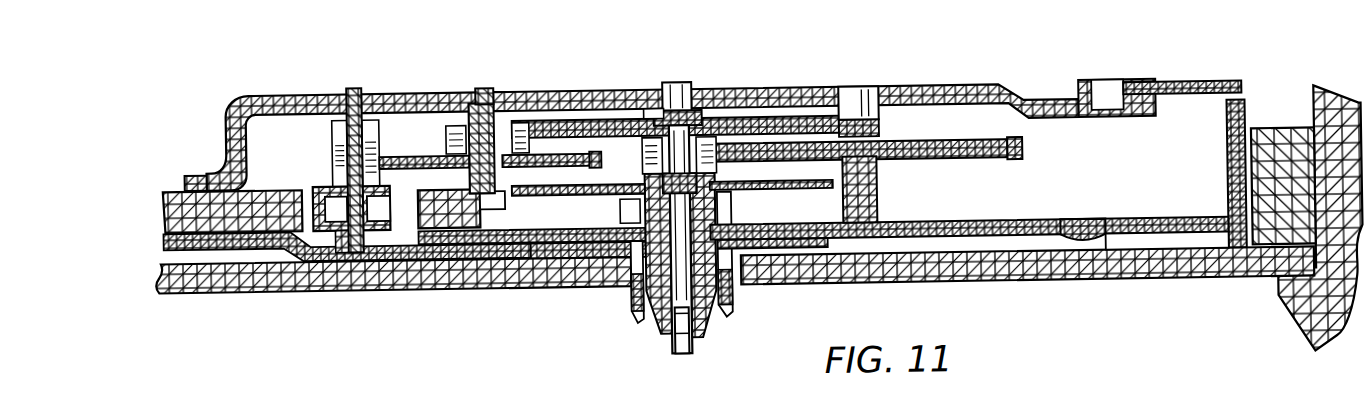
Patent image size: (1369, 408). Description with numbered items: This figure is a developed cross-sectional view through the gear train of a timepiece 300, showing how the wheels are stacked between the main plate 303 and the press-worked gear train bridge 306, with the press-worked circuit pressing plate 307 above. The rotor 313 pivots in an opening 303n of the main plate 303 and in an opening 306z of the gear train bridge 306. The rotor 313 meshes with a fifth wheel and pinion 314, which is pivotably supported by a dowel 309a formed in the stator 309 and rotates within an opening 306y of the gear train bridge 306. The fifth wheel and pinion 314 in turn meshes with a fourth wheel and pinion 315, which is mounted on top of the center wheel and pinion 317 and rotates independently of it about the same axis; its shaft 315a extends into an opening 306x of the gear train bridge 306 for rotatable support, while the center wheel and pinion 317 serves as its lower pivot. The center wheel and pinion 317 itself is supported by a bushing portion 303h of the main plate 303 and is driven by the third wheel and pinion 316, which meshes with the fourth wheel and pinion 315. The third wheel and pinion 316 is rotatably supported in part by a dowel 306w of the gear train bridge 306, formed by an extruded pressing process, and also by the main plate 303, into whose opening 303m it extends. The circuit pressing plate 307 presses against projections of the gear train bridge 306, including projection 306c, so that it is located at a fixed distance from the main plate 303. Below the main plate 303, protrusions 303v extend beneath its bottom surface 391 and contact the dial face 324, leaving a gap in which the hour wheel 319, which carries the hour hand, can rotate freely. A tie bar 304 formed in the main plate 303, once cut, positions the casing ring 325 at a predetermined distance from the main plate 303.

The timepiece 300 is at (208, 302).
The main plate 303 is at (1130, 270).
The bushing portion 303h is at (627, 275).
The opening 303m is at (850, 238).
The opening 303n is at (362, 250).
The protrusions 303v is at (1092, 271).
The tie bar 304 is at (1262, 231).
The gear train bridge 306 is at (598, 89).
The projection 306c is at (1030, 100).
The dowel 306w is at (887, 90).
The opening 306x is at (686, 82).
The opening 306y is at (488, 85).
The opening 306z is at (357, 91).
The circuit pressing plate 307 is at (1182, 89).
The stator 309 is at (253, 210).
The dowel 309a is at (462, 93).
The rotor 313 is at (363, 108).
The fifth wheel and pinion 314 is at (514, 100).
The fourth wheel and pinion 315 is at (737, 122).
The shaft 315a is at (655, 90).
The third wheel and pinion 316 is at (808, 213).
The center wheel and pinion 317 is at (706, 310).
The hour wheel 319 is at (575, 255).
The dial face 324 is at (977, 270).
The casing ring 325 is at (1281, 146).
The bottom surface 391 is at (1202, 240).